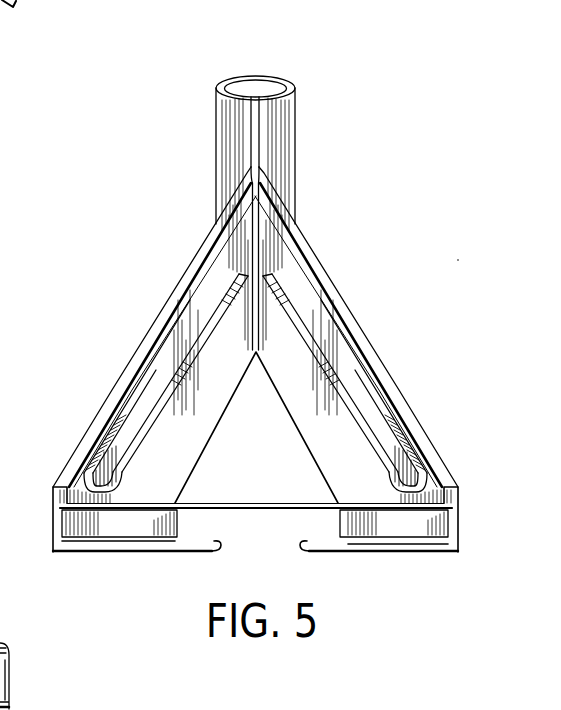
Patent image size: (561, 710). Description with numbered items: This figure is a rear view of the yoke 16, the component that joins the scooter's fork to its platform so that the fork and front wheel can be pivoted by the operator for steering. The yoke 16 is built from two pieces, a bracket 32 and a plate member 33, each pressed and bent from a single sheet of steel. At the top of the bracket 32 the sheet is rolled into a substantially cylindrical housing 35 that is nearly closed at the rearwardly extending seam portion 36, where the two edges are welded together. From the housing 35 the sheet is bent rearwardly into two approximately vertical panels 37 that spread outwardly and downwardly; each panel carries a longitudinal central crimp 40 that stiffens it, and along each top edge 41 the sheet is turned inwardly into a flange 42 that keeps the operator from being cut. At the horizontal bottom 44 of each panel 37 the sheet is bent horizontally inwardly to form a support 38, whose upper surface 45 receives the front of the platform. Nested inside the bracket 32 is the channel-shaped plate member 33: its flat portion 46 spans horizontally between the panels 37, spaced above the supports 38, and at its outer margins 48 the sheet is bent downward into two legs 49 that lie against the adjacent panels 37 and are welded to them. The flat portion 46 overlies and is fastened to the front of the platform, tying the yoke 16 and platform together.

The yoke 16 is at (262, 123).
The cylindrical housing 35 is at (215, 122).
The seam portion 36 is at (250, 124).
The bracket 32 is at (255, 327).
The top edges 41 is at (203, 238).
The flanges 42 is at (172, 316).
The longitudinal central crimps 40 is at (115, 418).
The vertical panels 37 is at (275, 388).
The outer margins 48 is at (57, 507).
The plate member 33 is at (53, 527).
The flat portion 46 is at (258, 512).
The supports 38 is at (148, 550).
The legs 49 is at (100, 542).
The horizontal bottom 44 is at (250, 574).
The surface 45 is at (216, 549).